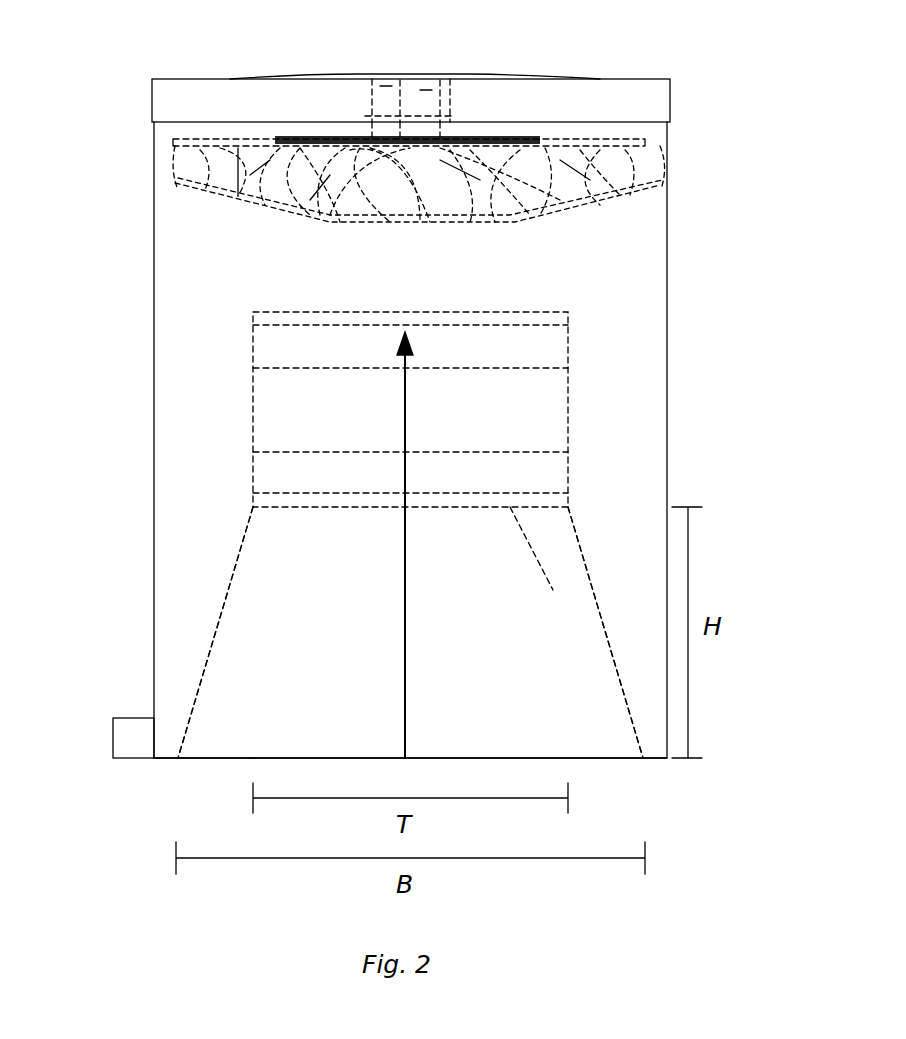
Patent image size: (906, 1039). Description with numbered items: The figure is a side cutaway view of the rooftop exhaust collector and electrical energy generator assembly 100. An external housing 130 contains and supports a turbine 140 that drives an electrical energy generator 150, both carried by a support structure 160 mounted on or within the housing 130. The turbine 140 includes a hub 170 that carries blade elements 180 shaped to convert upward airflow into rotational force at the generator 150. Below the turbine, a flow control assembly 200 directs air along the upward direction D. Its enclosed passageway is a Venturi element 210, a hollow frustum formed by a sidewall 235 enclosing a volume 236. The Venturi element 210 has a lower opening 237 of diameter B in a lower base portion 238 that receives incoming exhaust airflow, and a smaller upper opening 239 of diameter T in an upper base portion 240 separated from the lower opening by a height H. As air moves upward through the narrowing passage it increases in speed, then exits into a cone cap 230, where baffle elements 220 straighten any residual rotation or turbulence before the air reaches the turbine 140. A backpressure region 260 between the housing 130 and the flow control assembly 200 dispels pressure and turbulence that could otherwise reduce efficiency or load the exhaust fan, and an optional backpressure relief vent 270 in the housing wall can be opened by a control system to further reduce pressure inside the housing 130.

The rooftop exhaust collector and electrical energy generator assembly 100 is at (740, 250).
The housing 130 is at (153, 480).
The turbine 140 is at (626, 130).
The electrical energy generator 150 is at (418, 104).
The support structure 160 is at (250, 100).
The hub 170 is at (490, 138).
The blade elements 180 is at (168, 192).
The flow control assembly 200 is at (610, 463).
The Venturi element 210 is at (205, 660).
The baffle elements 220 is at (550, 352).
The cone cap 230 is at (550, 400).
The sidewall 235 is at (210, 630).
The volume 236 is at (476, 570).
The lower opening 237 is at (477, 765).
The lower base portion 238 is at (212, 762).
The upper opening 239 is at (539, 563).
The upper base portion 240 is at (370, 525).
The backpressure region 260 is at (222, 419).
The backpressure relief vent 270 is at (113, 742).